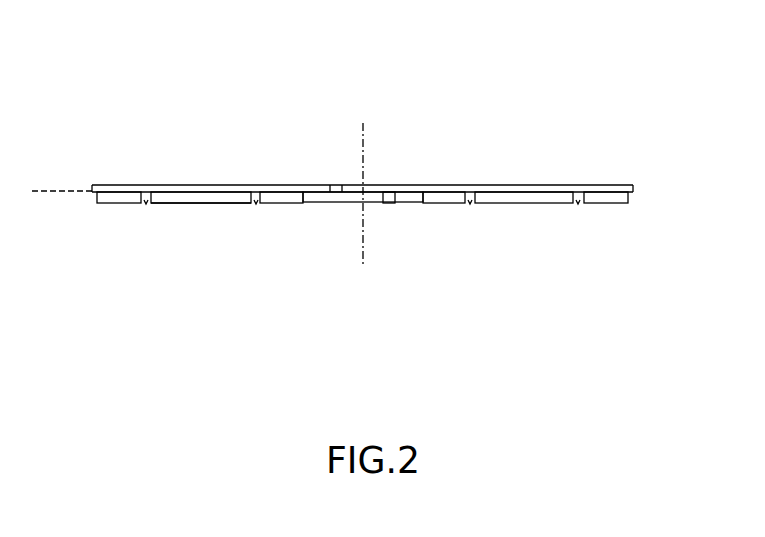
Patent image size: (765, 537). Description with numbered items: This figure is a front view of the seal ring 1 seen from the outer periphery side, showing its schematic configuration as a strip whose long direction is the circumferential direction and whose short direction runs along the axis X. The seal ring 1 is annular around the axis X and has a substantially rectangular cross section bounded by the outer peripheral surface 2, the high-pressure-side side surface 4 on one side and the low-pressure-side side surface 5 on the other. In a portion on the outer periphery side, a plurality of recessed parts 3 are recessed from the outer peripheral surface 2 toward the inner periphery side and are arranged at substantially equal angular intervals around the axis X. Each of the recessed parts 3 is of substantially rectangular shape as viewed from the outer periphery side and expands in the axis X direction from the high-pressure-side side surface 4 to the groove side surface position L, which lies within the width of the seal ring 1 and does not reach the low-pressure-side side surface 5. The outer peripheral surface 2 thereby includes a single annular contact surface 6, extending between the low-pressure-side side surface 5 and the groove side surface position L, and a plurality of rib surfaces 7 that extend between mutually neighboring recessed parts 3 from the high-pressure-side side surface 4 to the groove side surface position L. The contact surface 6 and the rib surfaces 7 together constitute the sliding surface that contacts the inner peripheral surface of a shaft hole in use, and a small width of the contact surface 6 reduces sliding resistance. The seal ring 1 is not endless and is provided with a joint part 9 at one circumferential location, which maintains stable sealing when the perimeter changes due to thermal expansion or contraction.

The seal ring 1 is at (483, 112).
The outer peripheral surface 2 is at (362, 146).
The recessed parts 3 is at (118, 203).
The high-pressure-side side surface 4 is at (175, 203).
The low-pressure-side side surface 5 is at (240, 185).
The contact surface 6 is at (560, 186).
The rib surfaces 7 is at (146, 204).
The joint part 9 is at (373, 203).
The groove side surface position L is at (59, 190).
The axis X is at (365, 140).